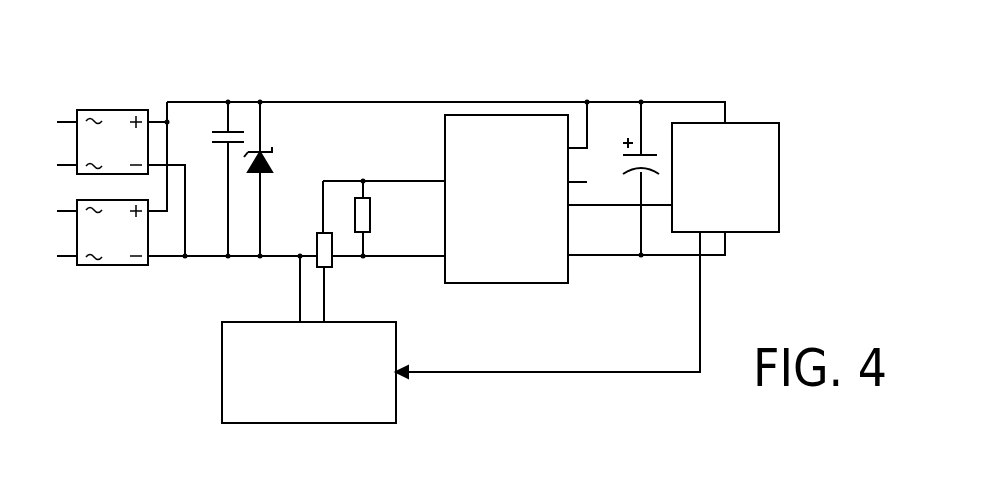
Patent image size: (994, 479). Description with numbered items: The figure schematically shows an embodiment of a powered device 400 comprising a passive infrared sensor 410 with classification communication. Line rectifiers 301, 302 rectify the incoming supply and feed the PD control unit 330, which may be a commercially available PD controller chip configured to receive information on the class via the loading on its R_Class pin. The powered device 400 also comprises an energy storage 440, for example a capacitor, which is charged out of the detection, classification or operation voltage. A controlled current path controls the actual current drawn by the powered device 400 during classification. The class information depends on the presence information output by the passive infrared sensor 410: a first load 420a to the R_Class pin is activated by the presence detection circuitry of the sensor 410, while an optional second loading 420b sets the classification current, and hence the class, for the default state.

The powered device 400 is at (573, 67).
The line rectifier 301 is at (108, 110).
The line rectifier 302 is at (108, 265).
The PD control unit 330 is at (480, 284).
The passive infrared sensor 410 is at (222, 366).
The first load 420a is at (333, 262).
The second loading 420b is at (371, 215).
The energy storage 440 is at (779, 152).